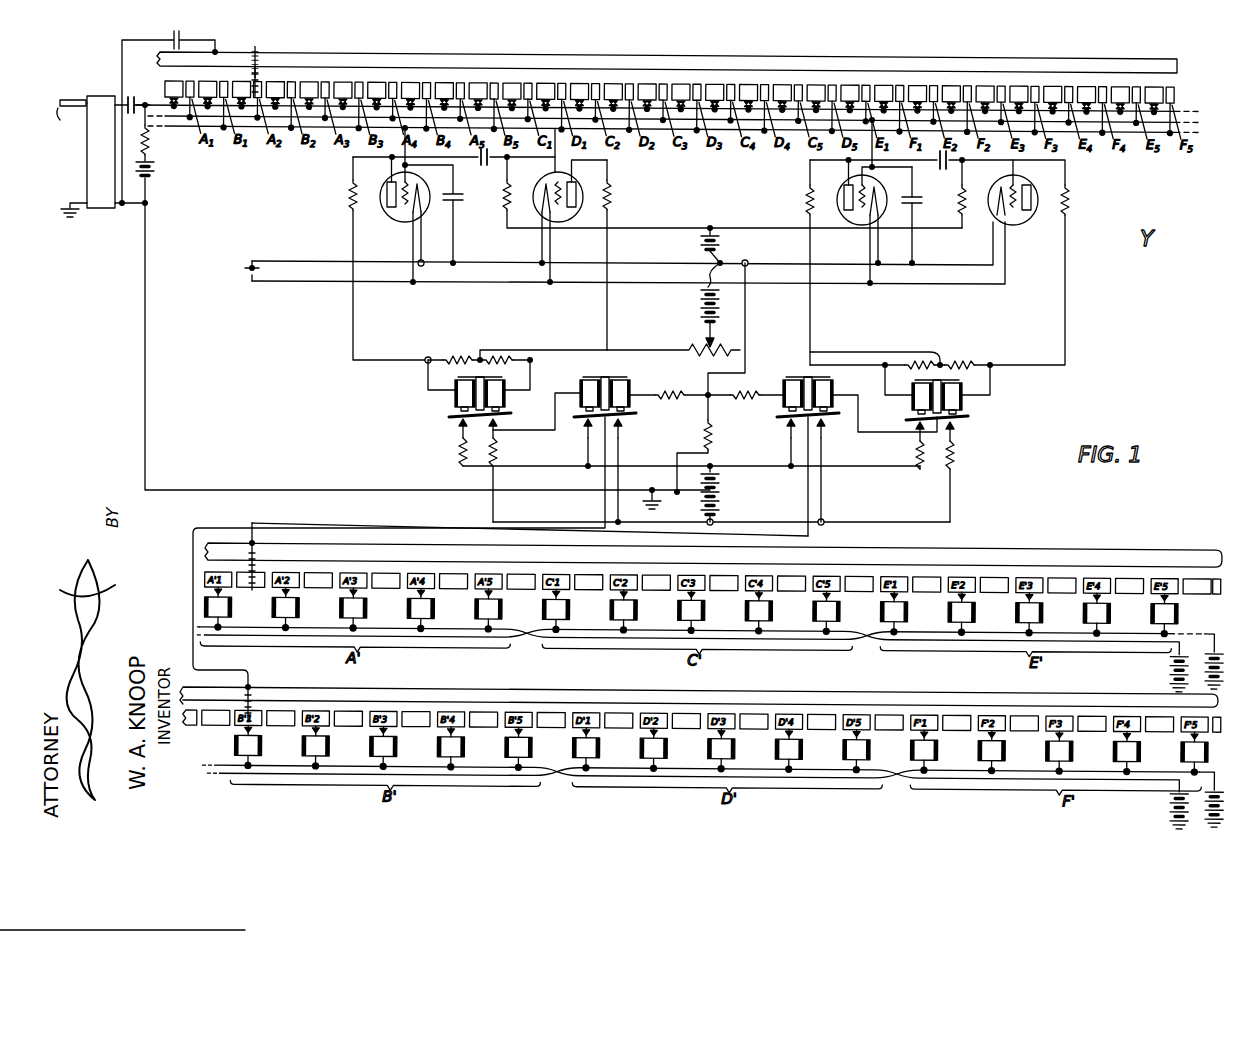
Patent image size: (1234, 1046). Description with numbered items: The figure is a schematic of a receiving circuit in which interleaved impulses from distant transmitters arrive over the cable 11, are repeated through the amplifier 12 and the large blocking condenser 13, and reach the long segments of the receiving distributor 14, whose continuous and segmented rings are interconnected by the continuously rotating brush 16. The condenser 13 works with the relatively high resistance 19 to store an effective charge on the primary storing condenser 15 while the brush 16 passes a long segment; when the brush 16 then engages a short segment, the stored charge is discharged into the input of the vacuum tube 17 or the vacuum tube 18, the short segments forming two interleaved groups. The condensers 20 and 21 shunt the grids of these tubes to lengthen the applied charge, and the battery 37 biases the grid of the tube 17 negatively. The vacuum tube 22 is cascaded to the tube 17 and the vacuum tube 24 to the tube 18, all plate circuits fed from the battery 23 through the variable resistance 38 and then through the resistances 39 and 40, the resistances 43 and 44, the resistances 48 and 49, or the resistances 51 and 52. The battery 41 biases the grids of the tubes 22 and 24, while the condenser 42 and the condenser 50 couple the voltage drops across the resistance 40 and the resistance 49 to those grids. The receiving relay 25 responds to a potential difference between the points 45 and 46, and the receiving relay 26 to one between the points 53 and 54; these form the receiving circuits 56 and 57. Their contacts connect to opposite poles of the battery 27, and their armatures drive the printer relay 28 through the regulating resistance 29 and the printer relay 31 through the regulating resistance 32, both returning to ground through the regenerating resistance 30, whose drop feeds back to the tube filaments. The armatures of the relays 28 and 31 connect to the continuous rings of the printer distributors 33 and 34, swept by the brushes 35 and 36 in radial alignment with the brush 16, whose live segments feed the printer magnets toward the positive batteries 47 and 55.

The cable 11 is at (72, 116).
The amplifier 12 is at (87, 153).
The blocking condenser 13 is at (127, 94).
The receiving distributor 14 is at (1150, 73).
The primary storing condenser 15 is at (170, 39).
The rotating brush 16 is at (284, 50).
The vacuum tube 17 is at (391, 212).
The vacuum tube 18 is at (843, 212).
The resistance 19 is at (150, 137).
The condenser 20 is at (460, 199).
The condenser 21 is at (917, 205).
The vacuum tube 22 is at (570, 180).
The battery 23 is at (700, 306).
The vacuum tube 24 is at (1021, 222).
The receiving relay 25 is at (450, 398).
The receiving relay 26 is at (910, 401).
The battery 27 is at (718, 493).
The printer relay 28 is at (631, 387).
The regulating resistance 29 is at (668, 399).
The regenerating resistance 30 is at (716, 436).
The printer relay 31 is at (835, 388).
The regulating resistance 32 is at (743, 399).
The printer distributor 33 is at (1199, 565).
The printer distributor 34 is at (1160, 712).
The brush 35 is at (260, 559).
The brush 36 is at (254, 703).
The battery 37 is at (152, 172).
The variable resistance 38 is at (686, 347).
The resistance 39 is at (456, 352).
The resistance 40 is at (347, 192).
The battery 41 is at (700, 242).
The condenser 42 is at (487, 166).
The resistance 43 is at (498, 352).
The resistance 44 is at (612, 206).
The point 45 is at (424, 363).
The point 46 is at (533, 363).
The battery 47 is at (1199, 642).
The resistance 48 is at (916, 362).
The resistance 49 is at (800, 204).
The condenser 50 is at (946, 168).
The resistance 51 is at (964, 362).
The resistance 52 is at (1073, 200).
The point 53 is at (993, 362).
The point 54 is at (885, 362).
The battery 55 is at (1188, 796).
The receiving circuit 56 is at (490, 300).
The receiving circuit 57 is at (940, 300).